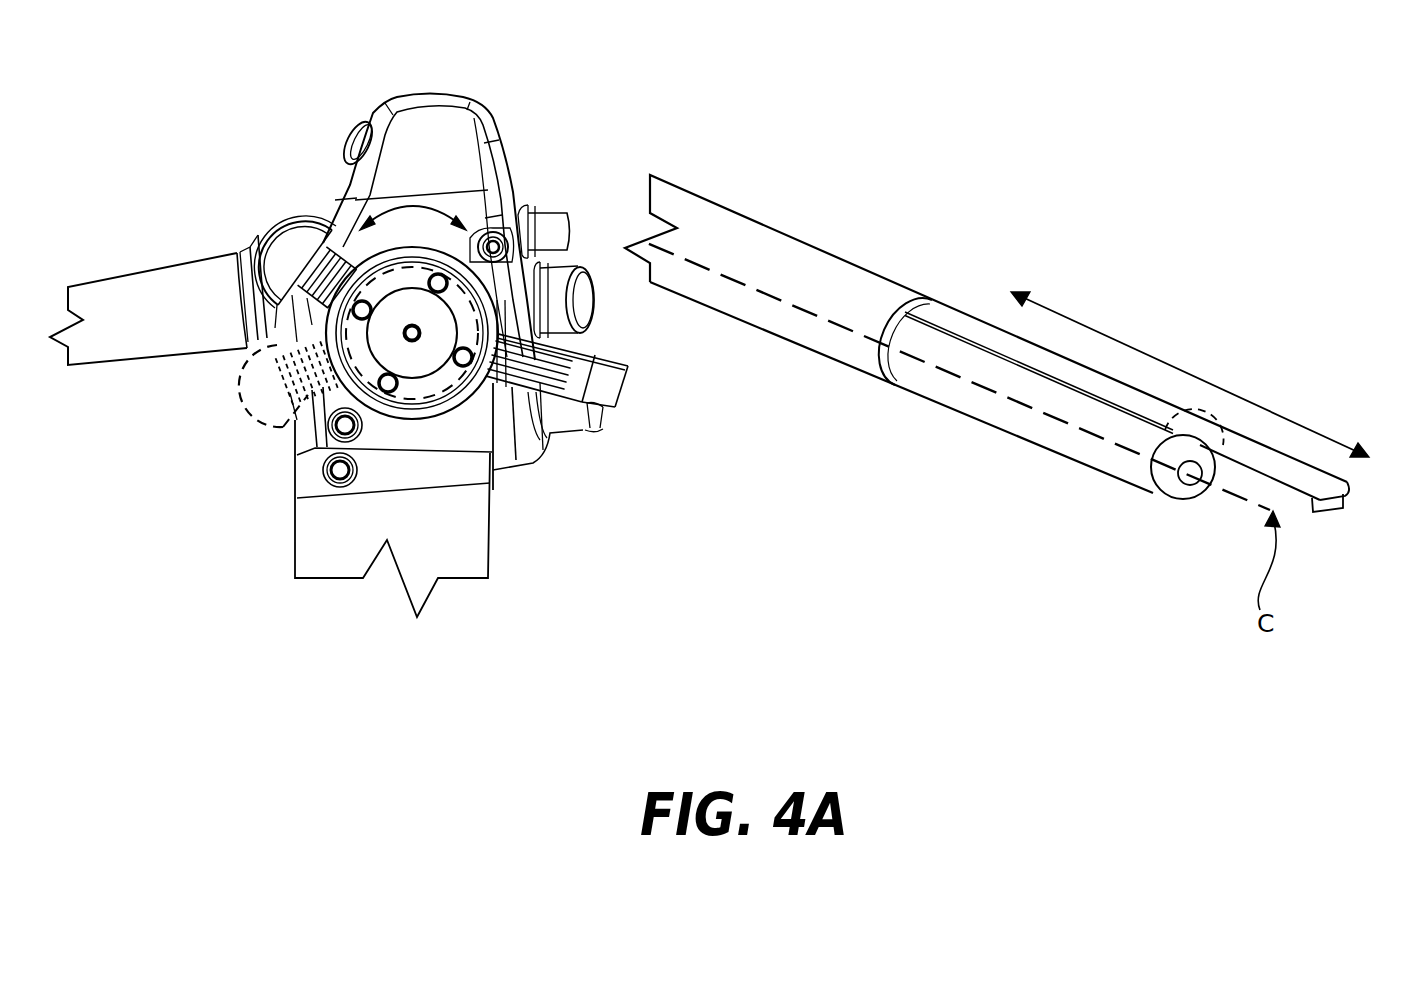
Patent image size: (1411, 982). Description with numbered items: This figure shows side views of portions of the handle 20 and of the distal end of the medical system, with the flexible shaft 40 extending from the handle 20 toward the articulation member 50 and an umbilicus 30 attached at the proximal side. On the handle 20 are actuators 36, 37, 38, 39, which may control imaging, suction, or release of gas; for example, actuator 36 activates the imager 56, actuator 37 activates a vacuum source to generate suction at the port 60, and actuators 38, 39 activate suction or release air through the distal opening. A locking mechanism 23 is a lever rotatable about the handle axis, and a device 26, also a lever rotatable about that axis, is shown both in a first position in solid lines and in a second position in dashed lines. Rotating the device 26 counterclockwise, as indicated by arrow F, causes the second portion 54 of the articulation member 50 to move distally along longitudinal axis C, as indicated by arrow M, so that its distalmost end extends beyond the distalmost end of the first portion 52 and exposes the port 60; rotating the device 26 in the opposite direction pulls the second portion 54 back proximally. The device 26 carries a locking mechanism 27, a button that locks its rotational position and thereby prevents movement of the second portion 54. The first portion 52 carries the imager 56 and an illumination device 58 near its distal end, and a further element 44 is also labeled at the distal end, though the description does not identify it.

The handle 20 is at (535, 125).
The locking mechanism 23 is at (612, 375).
The device 26 is at (307, 243).
The locking mechanism 27 is at (270, 233).
The umbilicus 30 is at (143, 283).
The actuator 36 is at (353, 143).
The actuator 37 is at (547, 223).
The actuator 38 is at (542, 282).
The actuator 39 is at (583, 430).
The flexible shaft 40 is at (773, 245).
The pivot pin 44 is at (1193, 473).
The articulation member 50 is at (1104, 221).
The first portion 52 is at (1090, 460).
The second portion 54 is at (1307, 473).
The imager 56 is at (1163, 470).
The illumination device 58 is at (1208, 443).
The port 60 is at (1328, 510).